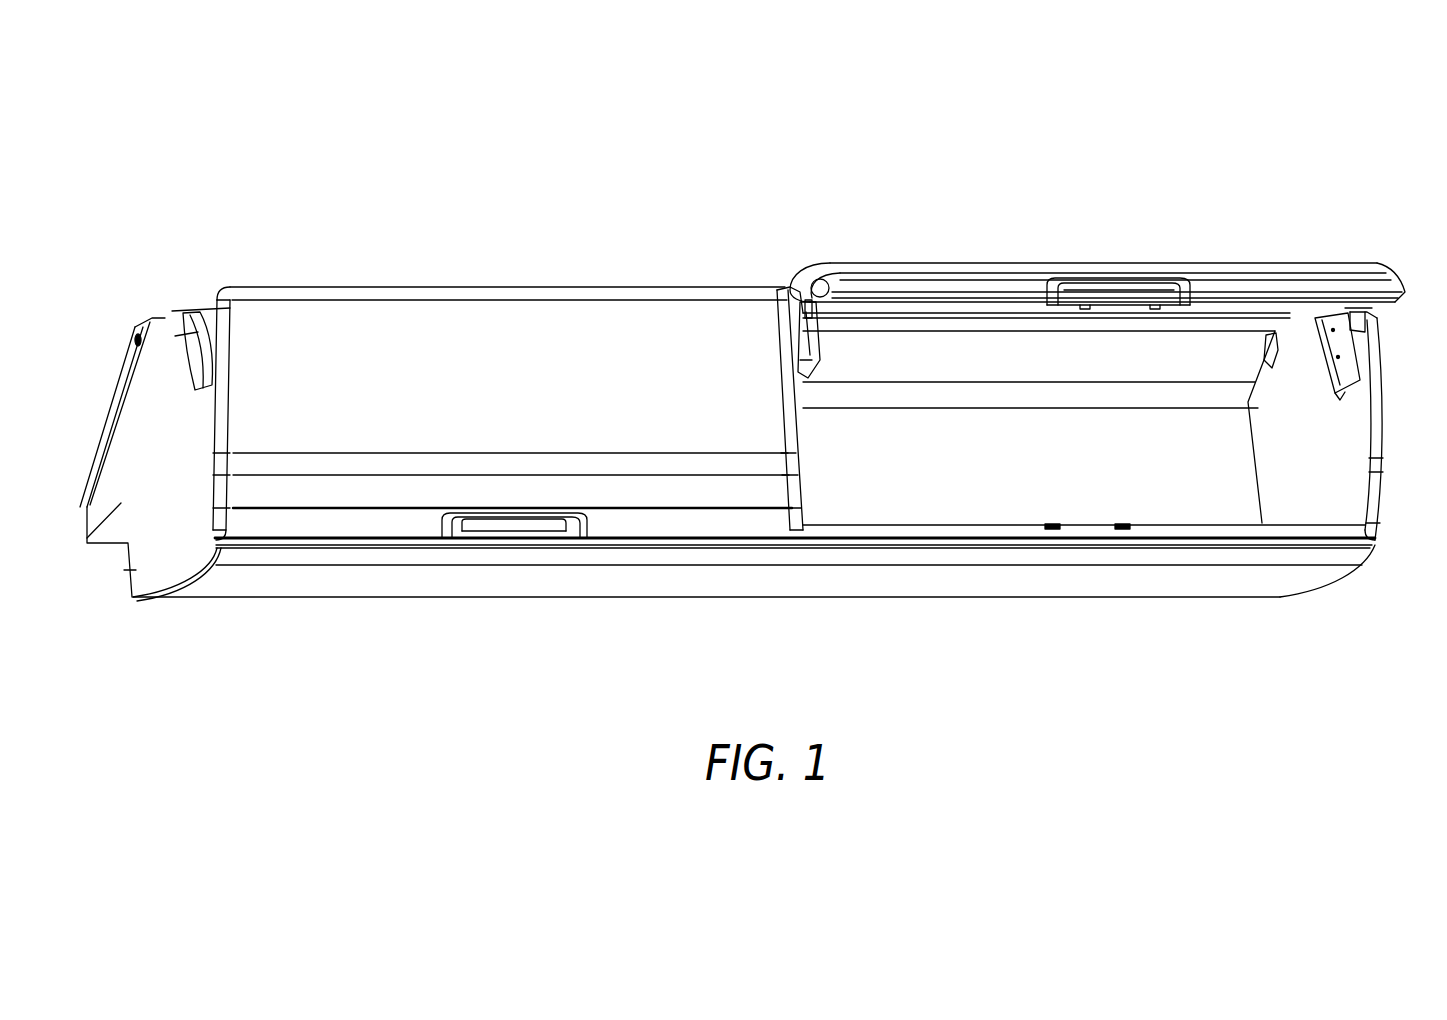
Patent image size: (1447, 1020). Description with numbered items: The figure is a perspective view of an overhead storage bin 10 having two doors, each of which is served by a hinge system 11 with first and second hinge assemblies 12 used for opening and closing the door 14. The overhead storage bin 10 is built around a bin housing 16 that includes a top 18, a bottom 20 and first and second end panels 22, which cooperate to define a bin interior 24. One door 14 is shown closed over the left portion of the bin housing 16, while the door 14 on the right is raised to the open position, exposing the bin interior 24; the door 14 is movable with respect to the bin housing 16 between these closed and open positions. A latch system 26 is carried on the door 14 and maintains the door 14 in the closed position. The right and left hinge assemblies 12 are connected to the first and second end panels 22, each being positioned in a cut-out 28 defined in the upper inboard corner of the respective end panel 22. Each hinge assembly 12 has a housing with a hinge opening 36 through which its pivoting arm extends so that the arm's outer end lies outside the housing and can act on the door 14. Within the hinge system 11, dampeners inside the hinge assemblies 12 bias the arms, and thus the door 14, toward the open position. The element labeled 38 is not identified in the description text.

The overhead storage bin 10 is at (672, 248).
The hinge system 11 is at (1380, 318).
The hinge assembly 12 is at (193, 333).
The door 14 is at (550, 391).
The bin housing 16 is at (1126, 582).
The top 18 is at (1210, 330).
The bottom 20 is at (845, 522).
The end panel 22 is at (1330, 483).
The bin interior 24 is at (1010, 474).
The latch system 26 is at (1132, 250).
The cut-out 28 is at (1337, 383).
The hinge opening 36 is at (810, 310).
The hinge member 38 is at (1362, 305).